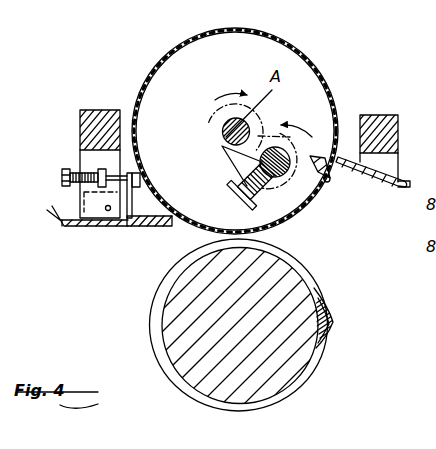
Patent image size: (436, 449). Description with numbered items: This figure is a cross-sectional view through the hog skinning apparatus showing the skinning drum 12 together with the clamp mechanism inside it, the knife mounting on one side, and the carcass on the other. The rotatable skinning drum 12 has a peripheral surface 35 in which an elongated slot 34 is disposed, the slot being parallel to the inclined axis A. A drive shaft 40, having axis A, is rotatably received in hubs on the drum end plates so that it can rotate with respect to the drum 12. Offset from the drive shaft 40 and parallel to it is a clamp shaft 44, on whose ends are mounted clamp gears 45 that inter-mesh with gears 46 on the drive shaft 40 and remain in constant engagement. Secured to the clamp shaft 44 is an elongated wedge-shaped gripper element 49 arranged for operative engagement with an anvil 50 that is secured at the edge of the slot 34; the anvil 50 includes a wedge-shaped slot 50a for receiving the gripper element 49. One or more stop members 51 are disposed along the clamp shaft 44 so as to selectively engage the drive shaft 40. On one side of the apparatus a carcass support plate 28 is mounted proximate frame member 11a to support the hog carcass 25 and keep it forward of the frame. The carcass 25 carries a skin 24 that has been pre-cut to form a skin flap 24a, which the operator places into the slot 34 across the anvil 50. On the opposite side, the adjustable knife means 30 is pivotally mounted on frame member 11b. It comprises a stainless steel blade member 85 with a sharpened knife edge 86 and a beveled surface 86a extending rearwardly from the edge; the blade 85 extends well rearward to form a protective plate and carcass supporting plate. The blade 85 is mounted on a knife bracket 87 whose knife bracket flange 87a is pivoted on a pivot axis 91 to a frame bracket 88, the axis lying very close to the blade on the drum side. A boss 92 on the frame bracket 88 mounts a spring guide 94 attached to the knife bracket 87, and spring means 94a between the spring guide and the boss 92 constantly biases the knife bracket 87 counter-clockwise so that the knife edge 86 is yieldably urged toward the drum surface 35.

The skinning drum 12 is at (300, 44).
The peripheral surface 35 is at (318, 75).
The clamp gears 45 is at (323, 120).
The drive shaft 40 is at (213, 119).
The drive shaft gears 46 is at (229, 92).
The stop members 51 is at (223, 157).
The clamp shaft 44 is at (286, 124).
The wedge-shaped gripper element 49 is at (247, 199).
The beveled surface 86a is at (229, 185).
The anvil 50 is at (328, 182).
The wedge-shaped slot 50a is at (318, 180).
The elongated slot 34 is at (310, 208).
The frame bracket 88 is at (77, 159).
The frame member 11b is at (79, 110).
The spring means 94a is at (82, 172).
The boss 92 is at (118, 165).
The spring guide 94 is at (133, 177).
The pivot axis 91 is at (97, 218).
The knife bracket 87 is at (131, 203).
The knife bracket flange 87a is at (82, 197).
The blade member 85 is at (127, 230).
The knife edge 86 is at (178, 231).
The adjustable knife means 30 is at (74, 266).
The frame member 11a is at (396, 116).
The carcass support plate 28 is at (390, 184).
The skin 24 is at (153, 315).
The skin flap 24a is at (332, 325).
The hog carcass 25 is at (322, 378).